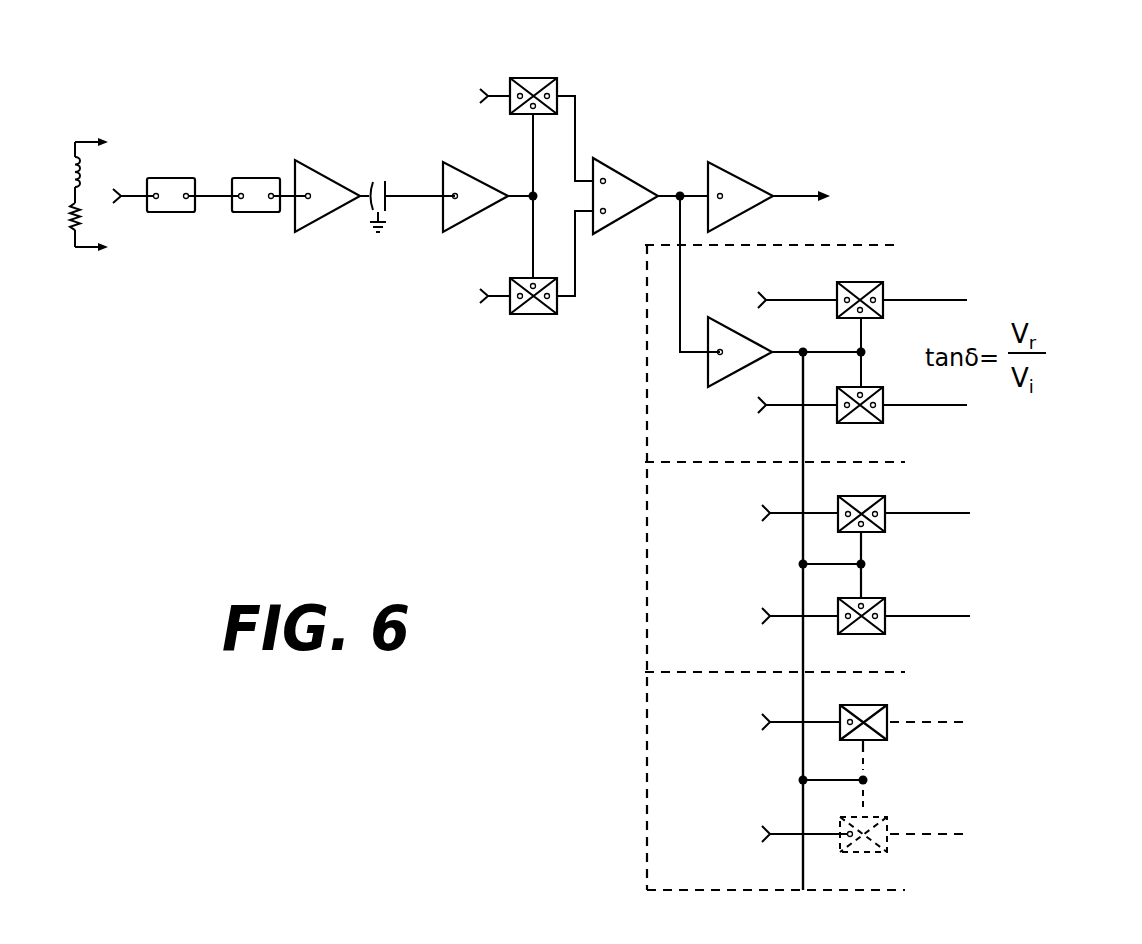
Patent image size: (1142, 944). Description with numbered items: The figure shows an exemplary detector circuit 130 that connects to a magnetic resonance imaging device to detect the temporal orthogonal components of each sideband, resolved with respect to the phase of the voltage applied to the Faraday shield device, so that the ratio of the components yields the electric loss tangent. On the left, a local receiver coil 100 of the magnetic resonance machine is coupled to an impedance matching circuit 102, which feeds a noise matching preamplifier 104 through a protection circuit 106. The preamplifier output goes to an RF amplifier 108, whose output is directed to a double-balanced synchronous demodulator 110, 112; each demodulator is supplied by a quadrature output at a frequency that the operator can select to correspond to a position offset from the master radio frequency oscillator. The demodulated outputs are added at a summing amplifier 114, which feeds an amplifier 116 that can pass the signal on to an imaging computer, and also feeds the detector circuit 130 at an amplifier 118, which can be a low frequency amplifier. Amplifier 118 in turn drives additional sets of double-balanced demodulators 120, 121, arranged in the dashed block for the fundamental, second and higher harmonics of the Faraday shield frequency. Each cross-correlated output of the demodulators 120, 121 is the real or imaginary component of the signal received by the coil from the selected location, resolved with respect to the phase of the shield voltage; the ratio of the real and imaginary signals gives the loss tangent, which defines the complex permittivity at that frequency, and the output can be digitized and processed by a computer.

The local receiver coil 100 is at (78, 188).
The impedance matching circuit 102 is at (170, 212).
The noise matching preamplifier 104 is at (330, 172).
The protection circuit 106 is at (258, 212).
The RF amplifier 108 is at (470, 172).
The double-balanced demodulator 110 is at (540, 78).
The double-balanced demodulator 112 is at (540, 314).
The summing amplifier 114 is at (622, 168).
The amplifier 116 is at (915, 199).
The amplifier 118 is at (752, 340).
The double-balanced demodulator 120 is at (883, 292).
The double-balanced demodulator 121 is at (883, 413).
The detector circuit 130 is at (636, 538).